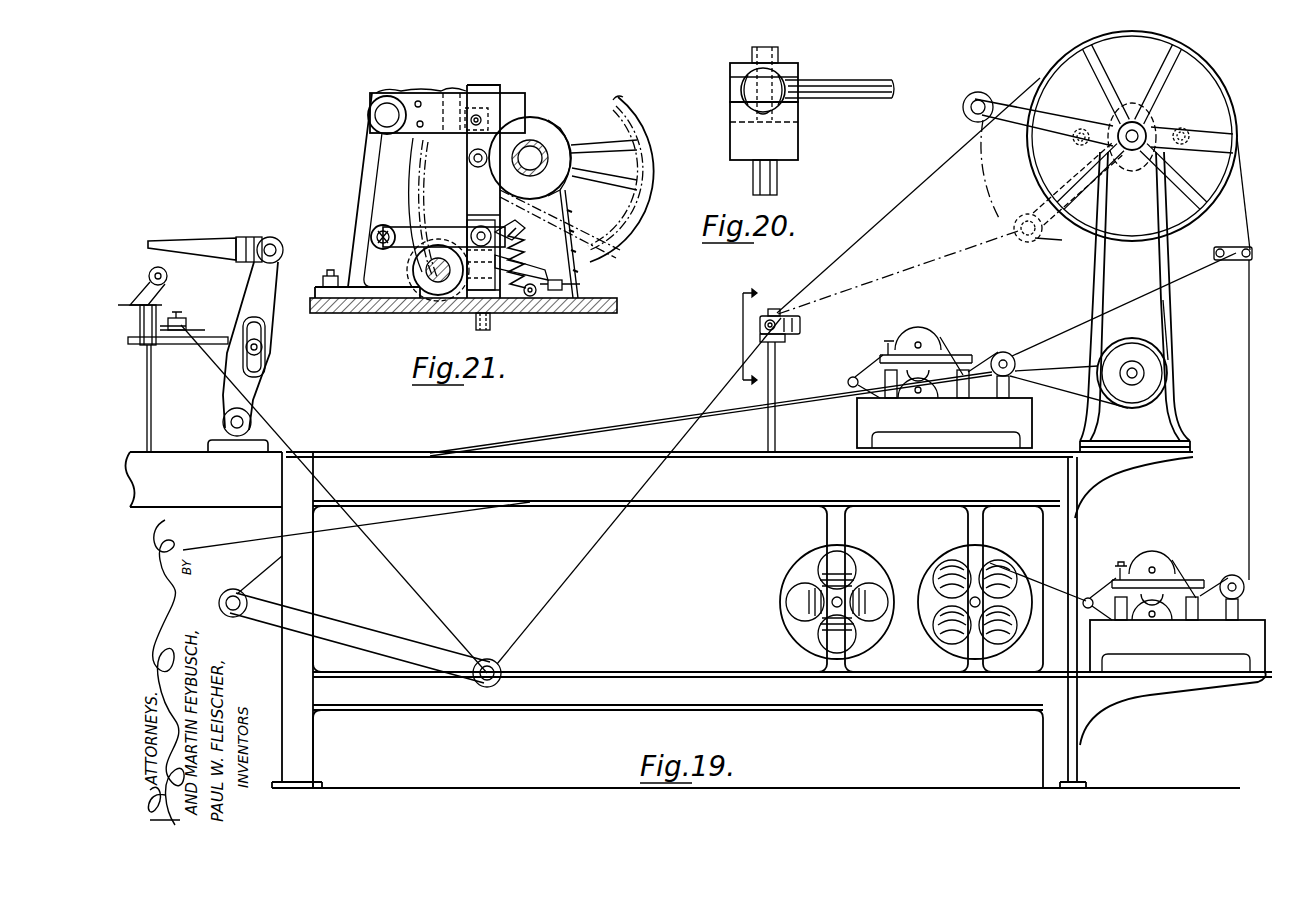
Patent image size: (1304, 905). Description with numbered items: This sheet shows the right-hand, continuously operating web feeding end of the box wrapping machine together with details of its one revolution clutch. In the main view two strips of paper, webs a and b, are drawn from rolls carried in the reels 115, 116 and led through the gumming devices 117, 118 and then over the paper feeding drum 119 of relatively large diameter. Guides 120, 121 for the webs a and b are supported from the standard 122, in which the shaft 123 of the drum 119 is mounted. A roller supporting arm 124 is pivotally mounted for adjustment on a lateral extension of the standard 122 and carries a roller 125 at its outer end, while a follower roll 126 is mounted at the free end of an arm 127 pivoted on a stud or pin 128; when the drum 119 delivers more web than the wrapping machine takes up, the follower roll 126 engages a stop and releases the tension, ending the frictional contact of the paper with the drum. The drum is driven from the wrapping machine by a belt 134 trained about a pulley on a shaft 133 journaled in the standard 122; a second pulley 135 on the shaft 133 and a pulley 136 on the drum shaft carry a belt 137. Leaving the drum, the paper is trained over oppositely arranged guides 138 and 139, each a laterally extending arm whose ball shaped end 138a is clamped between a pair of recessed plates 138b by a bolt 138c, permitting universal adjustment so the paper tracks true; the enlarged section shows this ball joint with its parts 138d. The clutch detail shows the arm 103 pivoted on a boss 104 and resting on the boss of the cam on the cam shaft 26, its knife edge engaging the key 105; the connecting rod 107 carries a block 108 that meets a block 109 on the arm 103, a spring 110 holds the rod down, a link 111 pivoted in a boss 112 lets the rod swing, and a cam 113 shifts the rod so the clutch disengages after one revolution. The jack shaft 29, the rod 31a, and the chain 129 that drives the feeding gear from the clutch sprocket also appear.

In FIG. 19, the reel 115 is at (795, 572).
In FIG. 19, the reel 116 is at (948, 561).
In FIG. 19, the gumming device 117 is at (1018, 418).
In FIG. 19, the gumming device 118 is at (1226, 650).
In FIG. 19, the paper feeding drum 119 is at (1200, 73).
In FIG. 19, the guide 120 is at (1214, 254).
In FIG. 19, the guide 121 is at (1243, 263).
In FIG. 19, the standard 122 is at (1122, 267).
In FIG. 19, the shaft 123 is at (1130, 120).
In FIG. 19, the roller supporting arm 124 is at (1012, 126).
In FIG. 19, the roller 125 is at (974, 98).
In FIG. 19, the follower roll 126 is at (488, 660).
In FIG. 19, the arm 127 is at (335, 624).
In FIG. 19, the stud or pin 128 is at (232, 596).
In FIG. 19, the shaft 133 is at (1140, 374).
In FIG. 19, the belt 134 is at (578, 432).
In FIG. 19, the second pulley 135 is at (1162, 390).
In FIG. 19, the pulley 136 is at (1163, 122).
In FIG. 19, the belt 137 is at (1168, 303).
In FIG. 19, the guide 138 is at (768, 322).
In FIG. 20, the guide 138 is at (859, 82).
In FIG. 20, the ball shaped end 138a is at (740, 92).
In FIG. 20, the recessed plates 138b is at (800, 116).
In FIG. 20, the bolt 138c is at (775, 51).
In FIG. 20, the clamp cap 138d is at (800, 71).
In FIG. 19, the guide 139 is at (177, 326).
In FIG. 19, the paper web a is at (1065, 346).
In FIG. 19, the paper web b is at (1249, 482).
In FIG. 21, the arm 103 is at (455, 110).
In FIG. 21, the boss 104 is at (370, 113).
In FIG. 21, the key 105 is at (560, 131).
In FIG. 21, the connecting rod 107 is at (482, 326).
In FIG. 21, the block 108 is at (490, 125).
In FIG. 21, the block 109 is at (495, 95).
In FIG. 21, the spring 110 is at (520, 262).
In FIG. 21, the link 111 is at (410, 226).
In FIG. 21, the boss 112 is at (372, 237).
In FIG. 21, the cam 113 is at (570, 157).
In FIG. 21, the cam shaft 26 is at (562, 176).
In FIG. 21, the jack shaft 29 is at (432, 284).
In FIG. 21, the rod 31a is at (560, 202).
In FIG. 21, the chain 129 is at (568, 291).